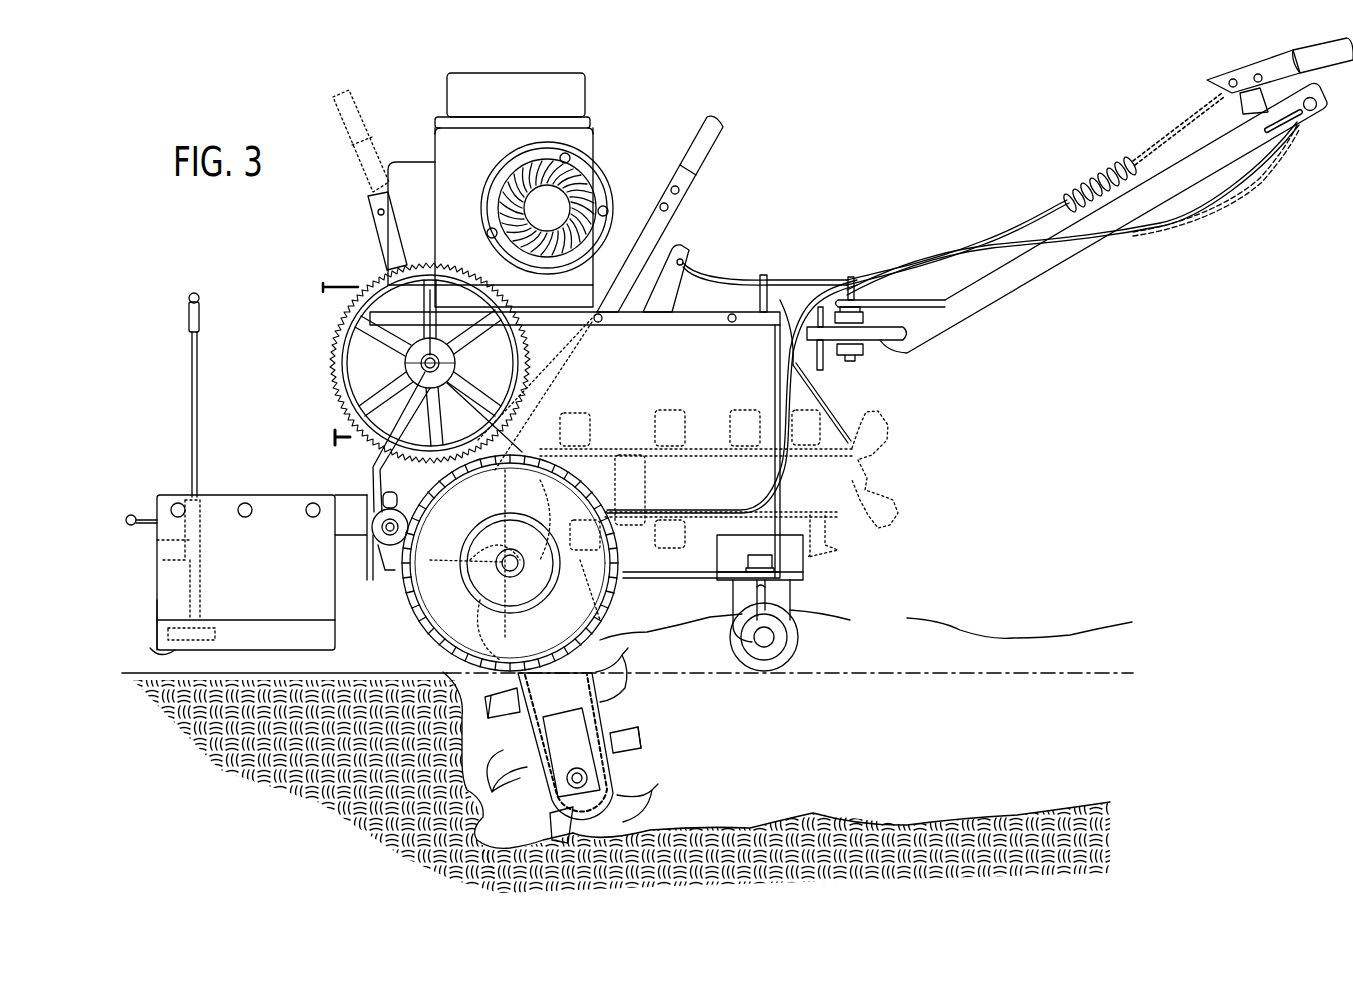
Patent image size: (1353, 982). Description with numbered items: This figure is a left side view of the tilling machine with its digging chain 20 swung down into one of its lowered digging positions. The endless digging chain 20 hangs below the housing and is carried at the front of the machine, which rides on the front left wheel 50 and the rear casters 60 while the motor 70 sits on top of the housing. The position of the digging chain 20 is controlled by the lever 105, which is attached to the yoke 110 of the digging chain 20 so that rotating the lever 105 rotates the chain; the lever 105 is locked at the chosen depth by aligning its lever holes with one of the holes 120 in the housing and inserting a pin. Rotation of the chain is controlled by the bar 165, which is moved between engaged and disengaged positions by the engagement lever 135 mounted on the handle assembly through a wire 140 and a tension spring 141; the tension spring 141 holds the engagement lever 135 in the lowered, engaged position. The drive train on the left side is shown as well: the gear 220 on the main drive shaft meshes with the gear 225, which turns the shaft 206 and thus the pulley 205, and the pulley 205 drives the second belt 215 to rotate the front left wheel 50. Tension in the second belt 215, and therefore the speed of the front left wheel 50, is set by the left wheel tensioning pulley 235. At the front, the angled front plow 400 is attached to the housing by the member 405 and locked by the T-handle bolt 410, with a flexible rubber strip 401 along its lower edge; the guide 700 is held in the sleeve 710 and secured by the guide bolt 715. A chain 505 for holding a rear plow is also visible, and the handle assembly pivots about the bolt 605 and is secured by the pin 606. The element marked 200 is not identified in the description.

The digging chain 20 is at (600, 710).
The front left wheel 50 is at (440, 626).
The rear casters 60 is at (745, 628).
The motor 70 is at (555, 96).
The lever 105 is at (710, 142).
The yoke 110 is at (590, 760).
The holes 120 is at (600, 324).
The engagement lever 135 is at (1303, 53).
The wire 140 is at (1157, 148).
The tension spring 141 is at (1083, 185).
The bar 165 is at (690, 254).
The handle grip 200 is at (1290, 120).
The pulley 205 is at (345, 322).
The shaft 206 is at (431, 290).
The second belt 215 is at (366, 470).
The gear 220 is at (556, 402).
The gear 225 is at (362, 285).
The left wheel tensioning pulley 235 is at (380, 570).
The angled front plow 400 is at (277, 522).
The flexible rubber strip 401 is at (175, 650).
The member 405 is at (340, 353).
The T-handle bolt 410 is at (330, 425).
The chain 505 is at (810, 390).
The bolt 605 is at (855, 300).
The pin 606 is at (818, 305).
The guide 700 is at (157, 618).
The sleeve 710 is at (160, 560).
The guide bolt 715 is at (132, 514).